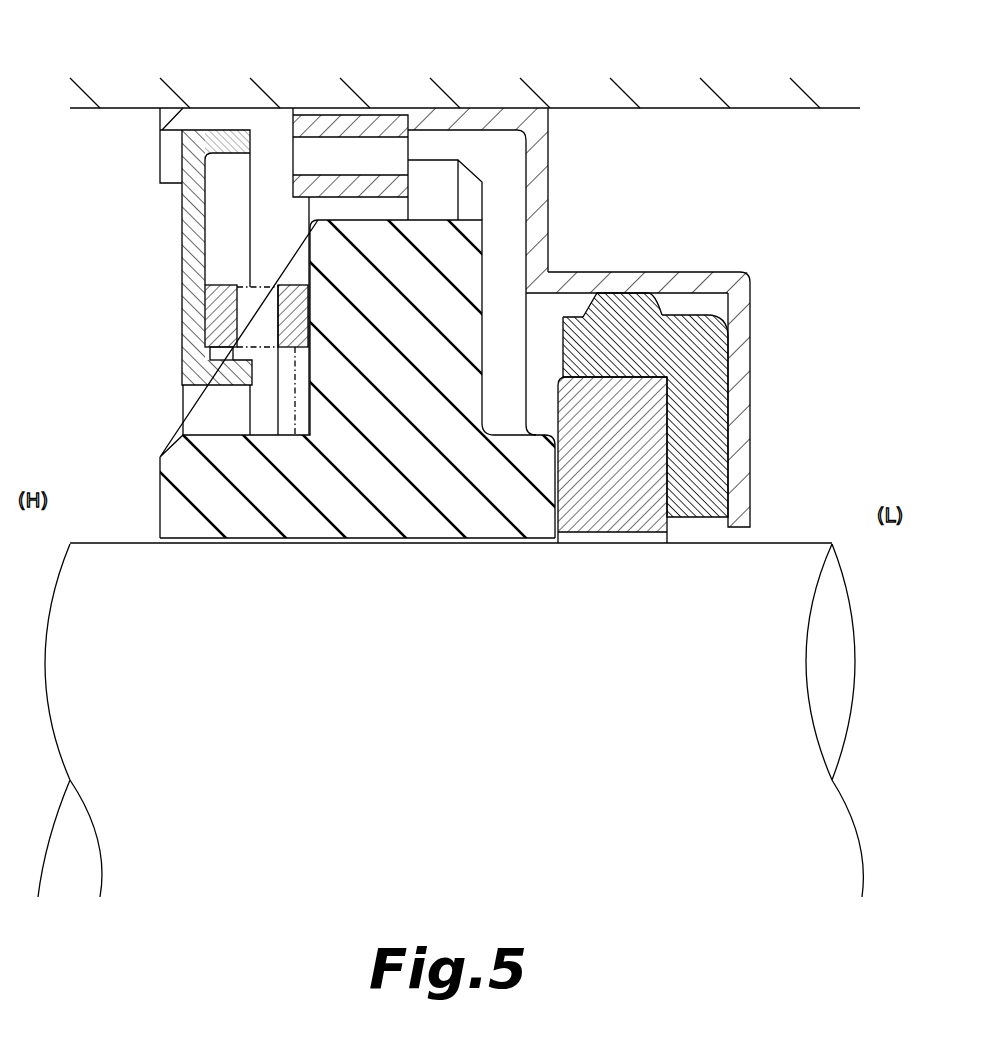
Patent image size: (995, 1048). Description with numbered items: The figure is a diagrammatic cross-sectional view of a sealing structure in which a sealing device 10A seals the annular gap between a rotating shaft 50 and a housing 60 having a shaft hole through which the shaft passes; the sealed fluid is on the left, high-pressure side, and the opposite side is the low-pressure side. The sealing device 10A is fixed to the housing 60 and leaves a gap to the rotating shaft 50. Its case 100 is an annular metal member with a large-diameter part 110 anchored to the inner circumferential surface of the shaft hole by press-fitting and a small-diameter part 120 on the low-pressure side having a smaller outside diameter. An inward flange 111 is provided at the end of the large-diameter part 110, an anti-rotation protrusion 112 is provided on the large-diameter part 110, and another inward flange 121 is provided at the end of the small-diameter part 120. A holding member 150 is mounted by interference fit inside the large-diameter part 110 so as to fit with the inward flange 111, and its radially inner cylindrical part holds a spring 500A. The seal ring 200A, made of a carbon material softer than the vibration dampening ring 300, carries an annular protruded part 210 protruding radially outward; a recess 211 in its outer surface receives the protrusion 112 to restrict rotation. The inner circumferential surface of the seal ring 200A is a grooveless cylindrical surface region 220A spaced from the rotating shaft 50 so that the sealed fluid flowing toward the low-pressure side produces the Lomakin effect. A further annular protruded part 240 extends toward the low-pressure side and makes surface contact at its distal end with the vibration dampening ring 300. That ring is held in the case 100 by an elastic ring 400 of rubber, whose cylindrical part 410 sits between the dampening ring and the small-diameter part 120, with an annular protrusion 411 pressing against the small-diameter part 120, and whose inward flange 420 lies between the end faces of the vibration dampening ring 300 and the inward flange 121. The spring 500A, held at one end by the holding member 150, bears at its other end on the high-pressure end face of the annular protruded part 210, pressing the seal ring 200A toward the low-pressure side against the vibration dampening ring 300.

The sealing device 10A is at (714, 163).
The rotating shaft 50 is at (450, 720).
The housing 60 is at (465, 72).
The case 100 is at (676, 251).
The large-diameter part 110 is at (483, 110).
The inward flange 111 is at (172, 158).
The anti-rotation protrusion 112 is at (330, 188).
The small-diameter part 120 is at (622, 280).
The inward flange 121 is at (752, 401).
The holding member 150 is at (185, 218).
The seal ring 200A is at (139, 444).
The annular protruded part 210 is at (428, 240).
The recess 211 is at (408, 206).
The cylindrical surface region 220A is at (205, 545).
The annular protruded part 240 is at (545, 467).
The vibration dampening ring 300 is at (617, 503).
The elastic ring 400 is at (703, 309).
The cylindrical part 410 is at (635, 345).
The annular protrusion 411 is at (632, 303).
The inward flange 420 is at (733, 432).
The spring 500A is at (250, 318).